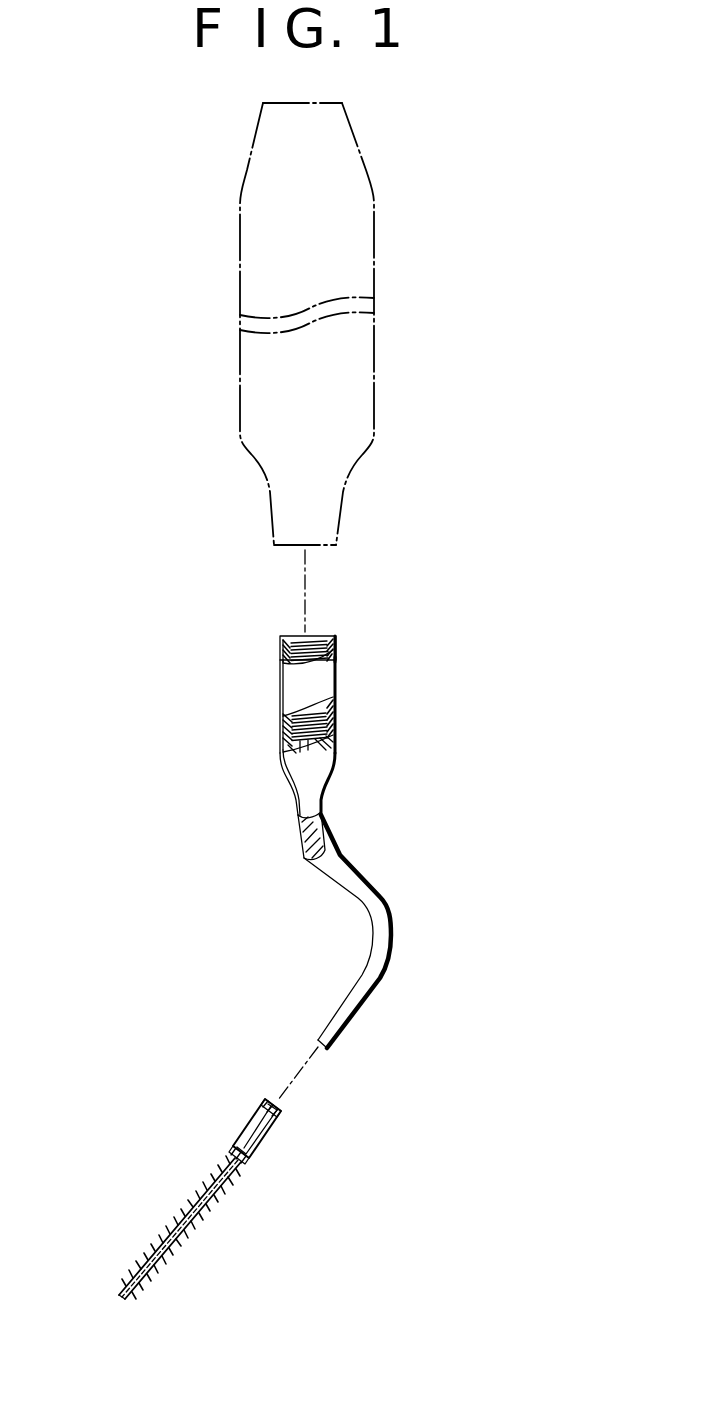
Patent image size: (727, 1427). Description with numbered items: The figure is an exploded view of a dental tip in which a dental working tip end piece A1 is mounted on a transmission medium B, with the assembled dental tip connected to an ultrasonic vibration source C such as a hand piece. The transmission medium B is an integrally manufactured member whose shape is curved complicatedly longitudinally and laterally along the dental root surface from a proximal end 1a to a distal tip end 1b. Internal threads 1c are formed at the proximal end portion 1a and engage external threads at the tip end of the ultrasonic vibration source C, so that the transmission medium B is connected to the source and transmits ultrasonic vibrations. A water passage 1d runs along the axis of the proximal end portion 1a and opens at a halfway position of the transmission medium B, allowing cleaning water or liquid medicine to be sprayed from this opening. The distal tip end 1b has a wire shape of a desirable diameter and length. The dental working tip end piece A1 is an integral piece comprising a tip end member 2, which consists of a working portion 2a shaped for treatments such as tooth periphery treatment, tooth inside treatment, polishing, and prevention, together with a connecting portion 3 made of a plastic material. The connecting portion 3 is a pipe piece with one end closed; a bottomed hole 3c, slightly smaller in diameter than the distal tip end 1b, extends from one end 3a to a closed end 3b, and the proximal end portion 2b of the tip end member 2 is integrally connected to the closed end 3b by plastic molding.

The ultrasonic vibration source C is at (417, 285).
The transmission medium B is at (369, 853).
The proximal end 1a is at (343, 646).
The distal tip end 1b is at (340, 1038).
The internal threads 1c is at (305, 722).
The water passage 1d is at (305, 848).
The tip end member 2 is at (208, 1211).
The working portion 2a is at (163, 1250).
The proximal end portion 2b is at (232, 1150).
The connecting portion 3 is at (300, 1118).
The one end 3a is at (284, 1104).
The closed end 3b is at (243, 1158).
The bottomed hole 3c is at (265, 1100).
The dental working tip end piece A1 is at (247, 1181).